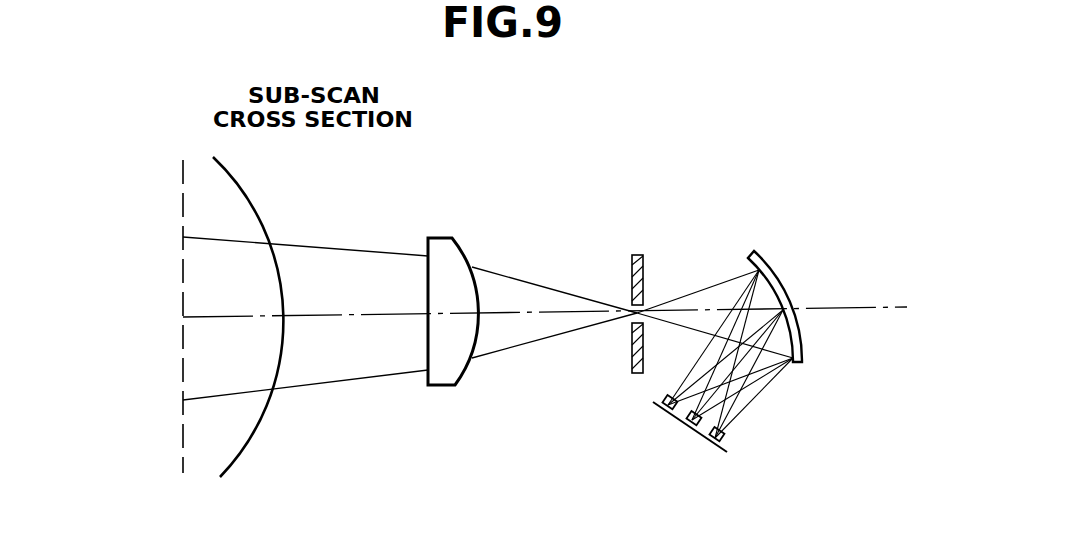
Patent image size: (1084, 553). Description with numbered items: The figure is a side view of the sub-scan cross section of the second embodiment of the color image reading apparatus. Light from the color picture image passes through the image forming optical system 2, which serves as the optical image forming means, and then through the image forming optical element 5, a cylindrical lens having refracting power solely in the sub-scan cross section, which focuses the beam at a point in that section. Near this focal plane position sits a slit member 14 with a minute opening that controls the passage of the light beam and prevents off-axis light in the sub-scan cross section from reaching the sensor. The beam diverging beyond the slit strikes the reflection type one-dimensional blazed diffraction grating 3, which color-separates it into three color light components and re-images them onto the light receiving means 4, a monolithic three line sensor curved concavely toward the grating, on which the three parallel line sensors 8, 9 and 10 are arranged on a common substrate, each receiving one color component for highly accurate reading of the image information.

The image forming optical system 2 is at (258, 208).
The image forming optical element 5 is at (462, 243).
The slit member 14 is at (645, 270).
The diffraction grating 3 is at (785, 273).
The light receiving means 4 is at (727, 452).
The line sensor 8 is at (663, 405).
The line sensor 9 is at (687, 423).
The line sensor 10 is at (710, 447).